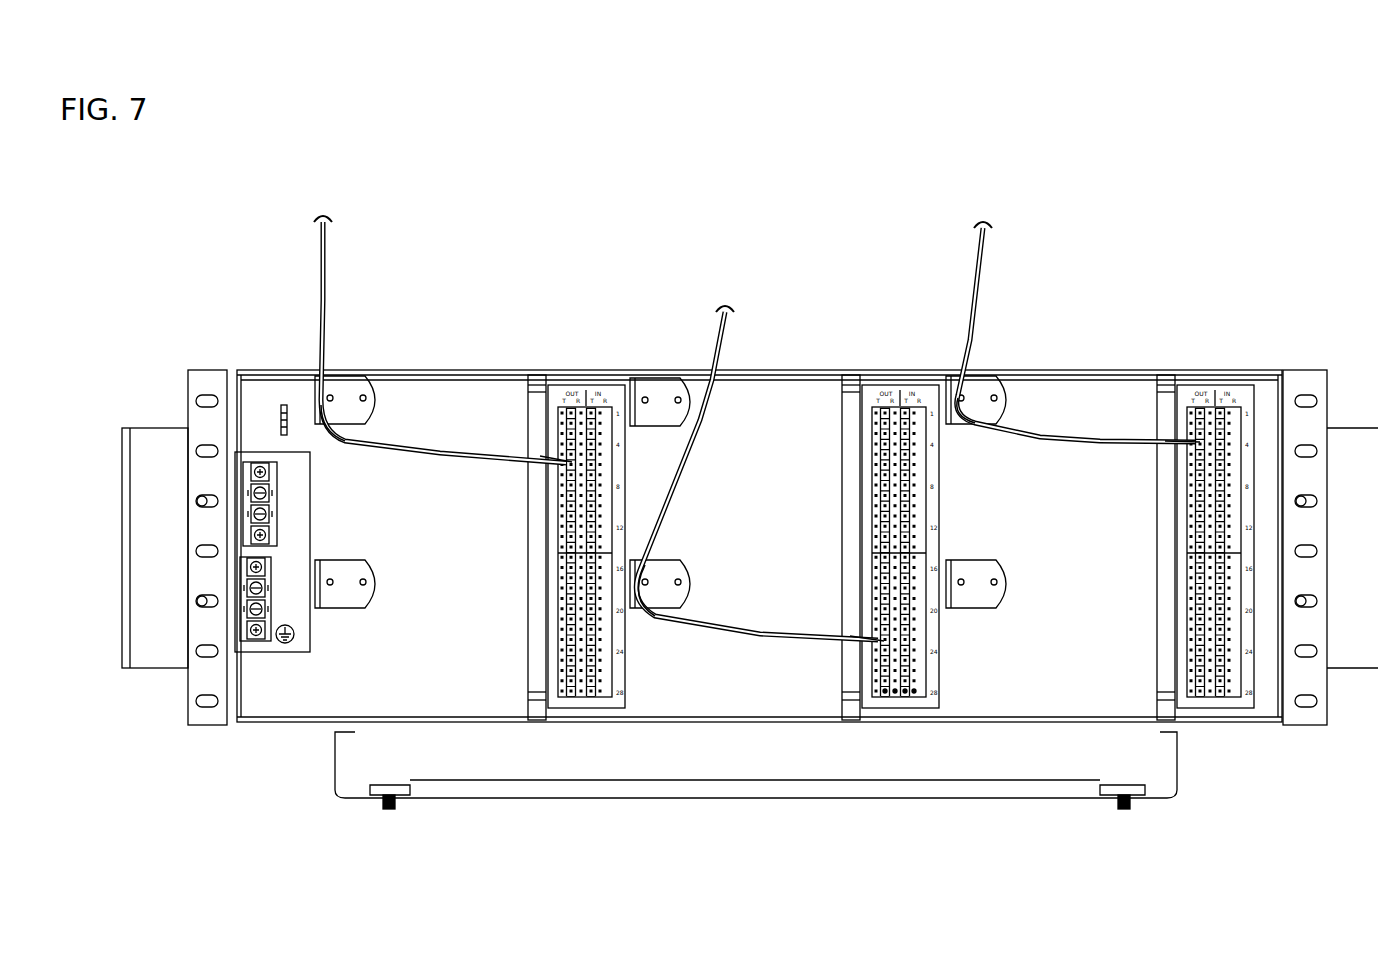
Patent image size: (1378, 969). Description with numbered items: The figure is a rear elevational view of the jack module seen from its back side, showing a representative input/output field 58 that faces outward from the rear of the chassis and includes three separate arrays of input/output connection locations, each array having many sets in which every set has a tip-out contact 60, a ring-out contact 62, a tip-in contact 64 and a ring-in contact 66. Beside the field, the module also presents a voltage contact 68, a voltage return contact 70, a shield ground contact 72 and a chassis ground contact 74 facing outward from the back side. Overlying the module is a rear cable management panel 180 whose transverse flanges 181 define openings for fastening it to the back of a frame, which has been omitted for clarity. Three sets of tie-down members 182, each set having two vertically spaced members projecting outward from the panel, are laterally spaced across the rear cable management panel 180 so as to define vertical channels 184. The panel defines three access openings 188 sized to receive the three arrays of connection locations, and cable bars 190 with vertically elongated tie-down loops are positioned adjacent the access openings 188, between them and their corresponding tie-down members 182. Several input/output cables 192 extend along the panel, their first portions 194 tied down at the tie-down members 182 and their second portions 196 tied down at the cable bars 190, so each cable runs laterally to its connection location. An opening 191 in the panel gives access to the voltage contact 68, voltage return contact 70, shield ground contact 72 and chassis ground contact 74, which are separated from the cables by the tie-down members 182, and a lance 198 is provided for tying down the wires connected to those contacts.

The input/output field 58 is at (1205, 358).
The tip-out contact 60 is at (885, 692).
The ring-out contact 62 is at (895, 692).
The tip-in contact 64 is at (905, 692).
The ring-in contact 66 is at (914, 692).
The voltage contact 68 is at (275, 497).
The voltage return contact 70 is at (275, 512).
The shield ground contact 72 is at (270, 580).
The chassis ground contact 74 is at (268, 596).
The rear cable management panel 180 is at (457, 372).
The transverse flanges 181 is at (197, 370).
The tie-down members 182 is at (632, 382).
The vertical channels 184 is at (427, 308).
The access openings 188 is at (612, 688).
The cable bars 190 is at (530, 498).
The opening 191 is at (255, 452).
The input/output cables 192 is at (330, 280).
The first portions 194 is at (340, 432).
The second portions 196 is at (540, 458).
The lance 198 is at (289, 425).